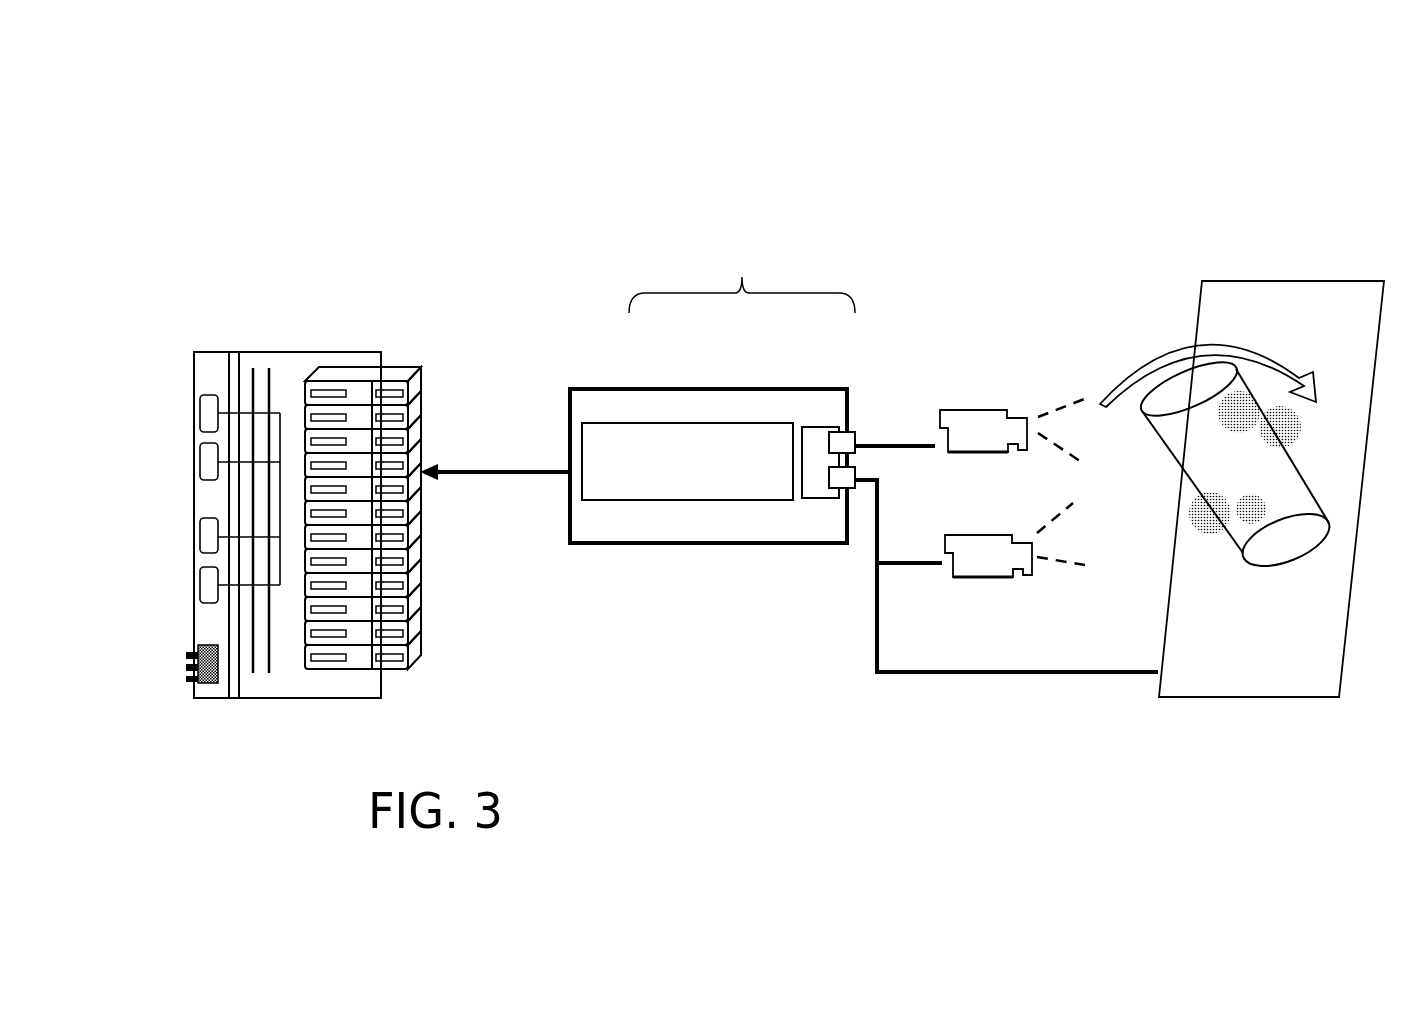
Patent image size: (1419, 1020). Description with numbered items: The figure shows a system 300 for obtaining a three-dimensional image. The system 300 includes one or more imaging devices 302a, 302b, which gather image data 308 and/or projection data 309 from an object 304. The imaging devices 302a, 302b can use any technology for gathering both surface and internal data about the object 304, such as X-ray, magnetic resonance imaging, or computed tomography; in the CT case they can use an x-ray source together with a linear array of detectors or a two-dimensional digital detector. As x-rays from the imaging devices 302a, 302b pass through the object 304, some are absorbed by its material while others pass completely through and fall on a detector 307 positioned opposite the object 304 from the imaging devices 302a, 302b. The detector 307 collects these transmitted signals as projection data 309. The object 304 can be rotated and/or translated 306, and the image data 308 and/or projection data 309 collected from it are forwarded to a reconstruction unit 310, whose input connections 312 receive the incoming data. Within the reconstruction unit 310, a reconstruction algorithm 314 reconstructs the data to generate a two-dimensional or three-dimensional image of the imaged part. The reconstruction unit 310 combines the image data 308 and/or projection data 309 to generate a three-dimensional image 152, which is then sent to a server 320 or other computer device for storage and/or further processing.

The system 300 is at (258, 82).
The server 320 is at (361, 352).
The 3D image 152 is at (495, 440).
The reconstruction unit 310 is at (735, 389).
The reconstruction algorithm 314 is at (687, 461).
The interface / input ports 312 is at (820, 498).
The image data 308 is at (906, 559).
The projection data 309 is at (1016, 690).
The imaging device 302a is at (973, 407).
The imaging device 302b is at (990, 588).
The detector 307 is at (1287, 282).
The rotation and/or translation 306 is at (1140, 355).
The object 304 is at (1277, 585).